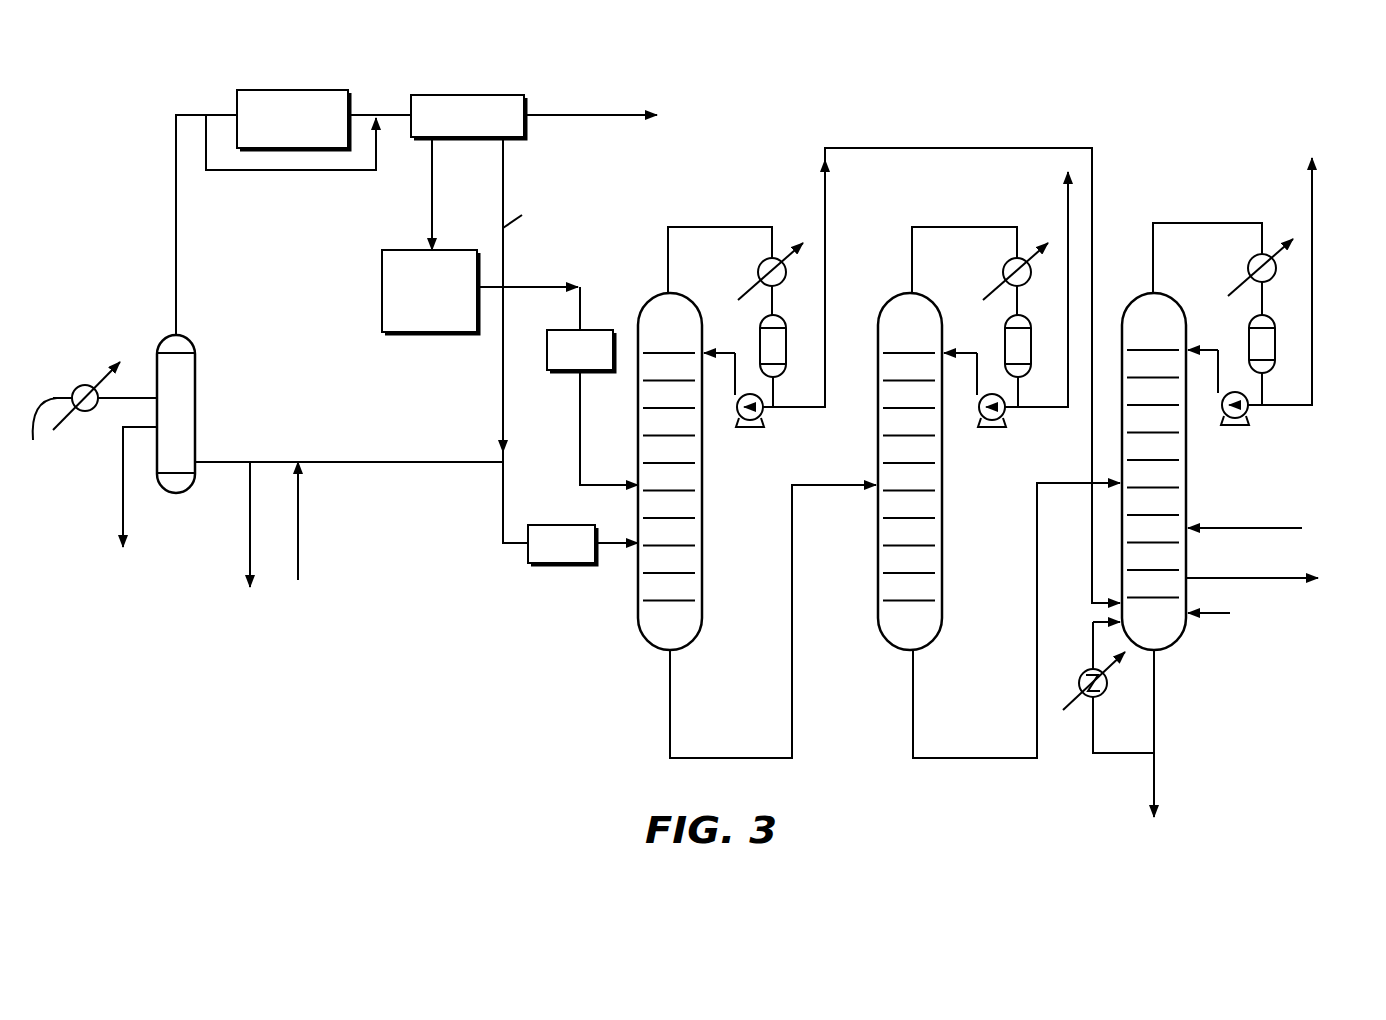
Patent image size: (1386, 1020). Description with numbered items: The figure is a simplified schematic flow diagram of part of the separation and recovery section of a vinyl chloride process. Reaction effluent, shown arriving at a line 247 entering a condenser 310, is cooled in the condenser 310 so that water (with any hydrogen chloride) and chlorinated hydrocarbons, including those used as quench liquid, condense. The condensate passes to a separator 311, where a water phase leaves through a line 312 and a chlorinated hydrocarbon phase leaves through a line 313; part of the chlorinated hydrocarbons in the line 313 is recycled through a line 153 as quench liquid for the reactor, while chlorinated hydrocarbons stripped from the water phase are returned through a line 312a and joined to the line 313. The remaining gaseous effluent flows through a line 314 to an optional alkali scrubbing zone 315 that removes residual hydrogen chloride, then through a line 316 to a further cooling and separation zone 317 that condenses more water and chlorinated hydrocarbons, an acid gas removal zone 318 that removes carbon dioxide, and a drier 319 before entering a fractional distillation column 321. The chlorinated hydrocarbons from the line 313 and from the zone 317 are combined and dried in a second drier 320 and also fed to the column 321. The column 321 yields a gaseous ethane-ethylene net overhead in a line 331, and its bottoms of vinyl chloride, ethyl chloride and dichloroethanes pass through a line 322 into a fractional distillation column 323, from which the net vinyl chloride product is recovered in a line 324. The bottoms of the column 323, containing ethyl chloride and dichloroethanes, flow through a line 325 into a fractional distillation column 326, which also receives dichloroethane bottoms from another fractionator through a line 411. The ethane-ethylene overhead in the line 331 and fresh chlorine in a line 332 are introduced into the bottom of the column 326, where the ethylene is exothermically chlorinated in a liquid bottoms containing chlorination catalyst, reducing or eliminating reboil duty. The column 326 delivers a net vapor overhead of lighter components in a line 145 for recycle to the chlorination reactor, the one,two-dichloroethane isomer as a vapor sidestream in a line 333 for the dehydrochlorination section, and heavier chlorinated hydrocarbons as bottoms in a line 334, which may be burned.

The line 145 is at (1312, 195).
The line 153 is at (250, 531).
The feed line 247 is at (55, 427).
The condenser 310 is at (84, 384).
The separator 311 is at (197, 425).
The line 312 is at (123, 500).
The line 312a is at (298, 521).
The line 313 is at (400, 458).
The line 314 is at (176, 240).
The alkali scrubbing zone 315 is at (290, 90).
The line 316 is at (390, 94).
The cooling and separation zone 317 is at (487, 95).
The acid gas removal zone 318 is at (410, 250).
The drier 319 is at (602, 328).
The drier 320 is at (562, 523).
The fractional distillation column 321 is at (632, 565).
The line 322 is at (792, 602).
The fractional distillation column 323 is at (874, 545).
The line 324 is at (1068, 207).
The line 325 is at (1037, 603).
The fractional distillation column 326 is at (1190, 466).
The line 331 is at (825, 232).
The line 332 is at (1222, 612).
The line 333 is at (1276, 560).
The line 334 is at (1154, 768).
The line 411 is at (1276, 510).